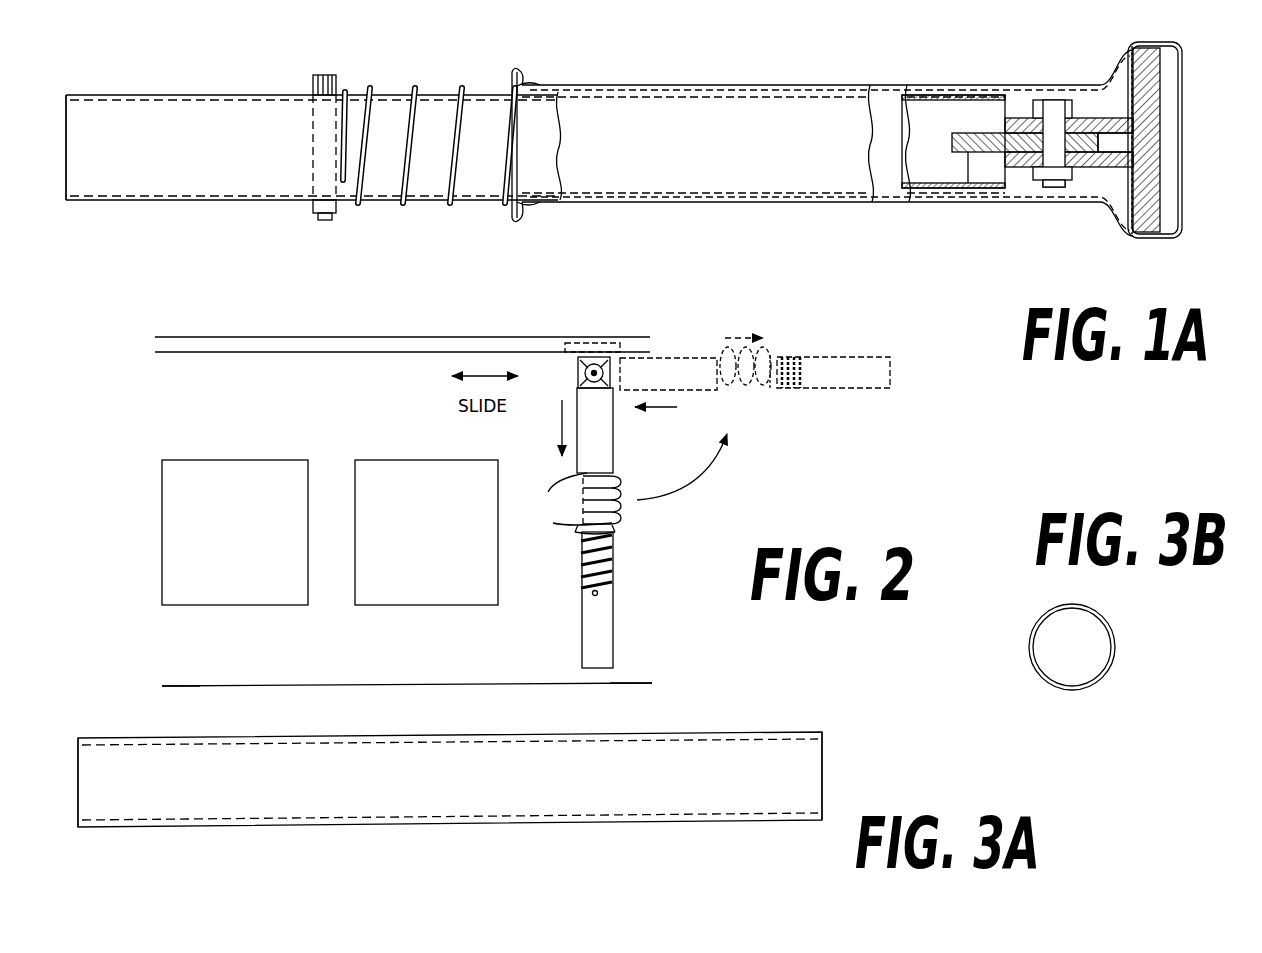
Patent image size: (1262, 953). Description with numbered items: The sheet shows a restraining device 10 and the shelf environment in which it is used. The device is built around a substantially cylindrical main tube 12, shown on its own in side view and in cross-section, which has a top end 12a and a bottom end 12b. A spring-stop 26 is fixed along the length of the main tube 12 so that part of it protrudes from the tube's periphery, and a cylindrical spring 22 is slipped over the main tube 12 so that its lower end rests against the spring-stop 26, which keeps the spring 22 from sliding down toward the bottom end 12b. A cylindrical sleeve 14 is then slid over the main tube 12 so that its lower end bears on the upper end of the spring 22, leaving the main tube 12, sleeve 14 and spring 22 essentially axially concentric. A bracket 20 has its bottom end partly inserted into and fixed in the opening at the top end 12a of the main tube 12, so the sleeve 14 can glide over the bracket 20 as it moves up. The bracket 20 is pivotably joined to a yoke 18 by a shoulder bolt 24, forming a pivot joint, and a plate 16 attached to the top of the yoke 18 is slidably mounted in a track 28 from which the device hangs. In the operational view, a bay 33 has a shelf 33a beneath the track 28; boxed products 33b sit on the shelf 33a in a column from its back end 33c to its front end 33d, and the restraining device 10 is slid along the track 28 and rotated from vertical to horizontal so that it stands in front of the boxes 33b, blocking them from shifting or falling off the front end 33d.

In FIG. 1A, the restraining device 10 is at (296, 230).
In FIG. 2, the restraining device 10 is at (628, 629).
In FIG. 1A, the main tube 12 is at (208, 200).
In FIG. 2, the main tube 12 is at (581, 611).
In FIG. 3A, the main tube 12 is at (746, 730).
In FIG. 3B, the main tube 12 is at (1123, 638).
In FIG. 3A, the top end of the main tube 12a is at (826, 782).
In FIG. 1A, the bottom end of the main tube 12b is at (66, 198).
In FIG. 3A, the bottom end of the main tube 12b is at (78, 760).
In FIG. 1A, the sleeve 14 is at (620, 208).
In FIG. 2, the sleeve 14 is at (608, 440).
In FIG. 1A, the plate 16 is at (1147, 230).
In FIG. 1A, the yoke 18 is at (1097, 192).
In FIG. 1A, the bracket 20 is at (968, 193).
In FIG. 1A, the spring 22 is at (455, 202).
In FIG. 2, the spring 22 is at (615, 565).
In FIG. 1A, the shoulder bolt 24 is at (1050, 103).
In FIG. 1A, the spring-stop 26 is at (308, 80).
In FIG. 1A, the track 28 is at (1186, 105).
In FIG. 2, the track 28 is at (575, 341).
In FIG. 2, the bay 33 is at (153, 630).
In FIG. 2, the shelf 33a is at (294, 681).
In FIG. 2, the boxed products 33b is at (278, 605).
In FIG. 2, the back end of the shelf 33c is at (195, 687).
In FIG. 2, the front end of the shelf 33d is at (648, 684).